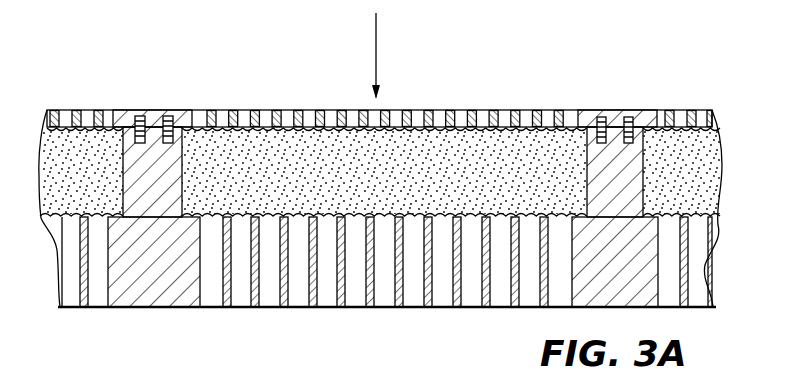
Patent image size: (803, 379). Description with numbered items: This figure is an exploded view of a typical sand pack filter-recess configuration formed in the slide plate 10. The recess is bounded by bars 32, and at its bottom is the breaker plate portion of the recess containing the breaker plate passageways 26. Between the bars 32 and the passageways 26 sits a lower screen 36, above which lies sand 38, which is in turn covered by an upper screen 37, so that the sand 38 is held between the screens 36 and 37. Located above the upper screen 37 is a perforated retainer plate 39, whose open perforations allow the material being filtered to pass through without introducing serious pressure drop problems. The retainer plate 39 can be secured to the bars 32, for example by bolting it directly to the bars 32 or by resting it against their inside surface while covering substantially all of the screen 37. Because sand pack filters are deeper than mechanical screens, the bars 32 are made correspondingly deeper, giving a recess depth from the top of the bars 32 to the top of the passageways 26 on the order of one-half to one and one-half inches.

The plate 10 is at (135, 300).
The breaker plate passageways 26 is at (388, 300).
The bars 32 is at (122, 147).
The lower screen 36 is at (712, 218).
The upper screen 37 is at (550, 132).
The sand 38 is at (240, 150).
The perforated retainer plate 39 is at (450, 111).